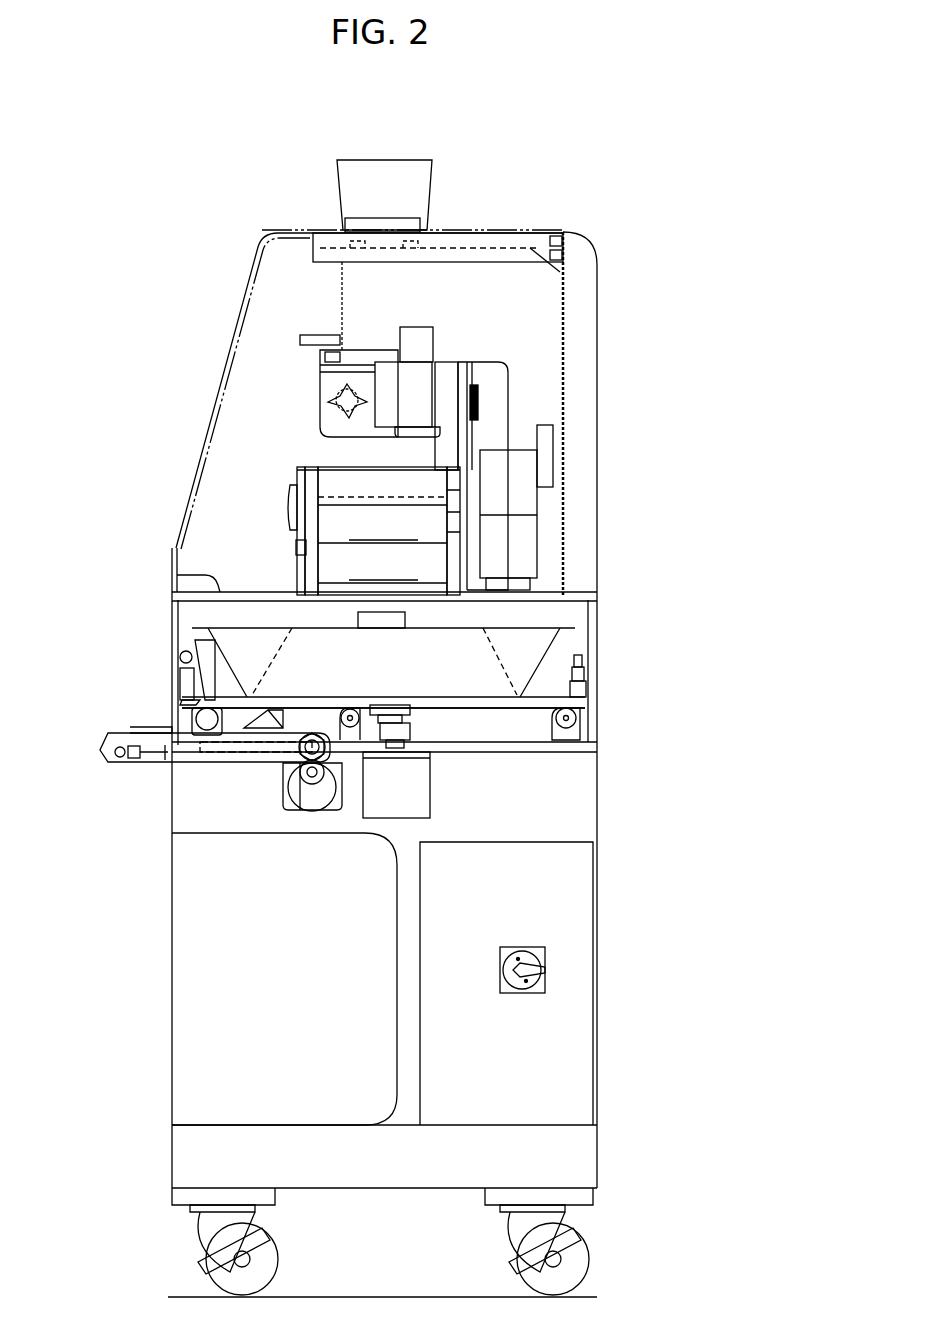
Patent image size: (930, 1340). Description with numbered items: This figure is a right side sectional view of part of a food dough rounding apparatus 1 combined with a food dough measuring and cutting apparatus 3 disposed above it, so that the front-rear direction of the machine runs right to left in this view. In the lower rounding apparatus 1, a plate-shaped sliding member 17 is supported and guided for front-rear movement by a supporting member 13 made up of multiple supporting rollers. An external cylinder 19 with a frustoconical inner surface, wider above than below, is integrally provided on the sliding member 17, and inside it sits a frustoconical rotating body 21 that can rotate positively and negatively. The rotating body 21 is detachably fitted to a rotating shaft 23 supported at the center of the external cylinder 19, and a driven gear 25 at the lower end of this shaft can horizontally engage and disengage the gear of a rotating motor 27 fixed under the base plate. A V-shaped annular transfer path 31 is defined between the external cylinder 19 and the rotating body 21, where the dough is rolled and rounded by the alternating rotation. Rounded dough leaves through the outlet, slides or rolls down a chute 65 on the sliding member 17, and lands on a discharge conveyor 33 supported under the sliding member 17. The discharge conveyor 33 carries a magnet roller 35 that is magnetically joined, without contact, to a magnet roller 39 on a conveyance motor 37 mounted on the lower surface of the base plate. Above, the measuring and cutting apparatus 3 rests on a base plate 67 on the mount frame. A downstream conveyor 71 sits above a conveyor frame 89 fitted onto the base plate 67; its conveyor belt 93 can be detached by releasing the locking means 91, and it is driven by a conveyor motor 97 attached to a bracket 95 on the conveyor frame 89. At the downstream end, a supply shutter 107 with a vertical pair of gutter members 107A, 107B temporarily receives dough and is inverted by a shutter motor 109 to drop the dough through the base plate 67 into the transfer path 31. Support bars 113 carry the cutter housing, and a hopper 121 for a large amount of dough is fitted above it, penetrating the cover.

The food dough rounding apparatus 1 is at (160, 655).
The food dough measuring and cutting apparatus 3 is at (588, 407).
The supporting member 13 is at (572, 732).
The sliding member 17 is at (520, 708).
The external cylinder 19 is at (555, 640).
The rotating body 21 is at (500, 640).
The rotating shaft 23 is at (402, 707).
The driven gear 25 is at (410, 738).
The rotating motor 27 is at (415, 800).
The transfer path 31 is at (520, 663).
The discharge conveyor 33 is at (128, 735).
The magnet roller 35 is at (312, 747).
The conveyance motor 37 is at (312, 812).
The magnet roller 39 is at (305, 775).
The chute 65 is at (280, 720).
The base plate 67 is at (200, 575).
The downstream conveyor 71 is at (293, 478).
The conveyor frame 89 is at (298, 548).
The locking means 91 is at (292, 500).
The conveyor belt 93 is at (330, 467).
The bracket 95 is at (470, 362).
The conveyor motor 97 is at (415, 380).
The supply shutter 107 is at (393, 574).
The gutter member 107A is at (383, 525).
The gutter member 107B is at (418, 598).
The shutter motor 109 is at (525, 495).
The support bars 113 is at (337, 360).
The hopper 121 is at (388, 170).